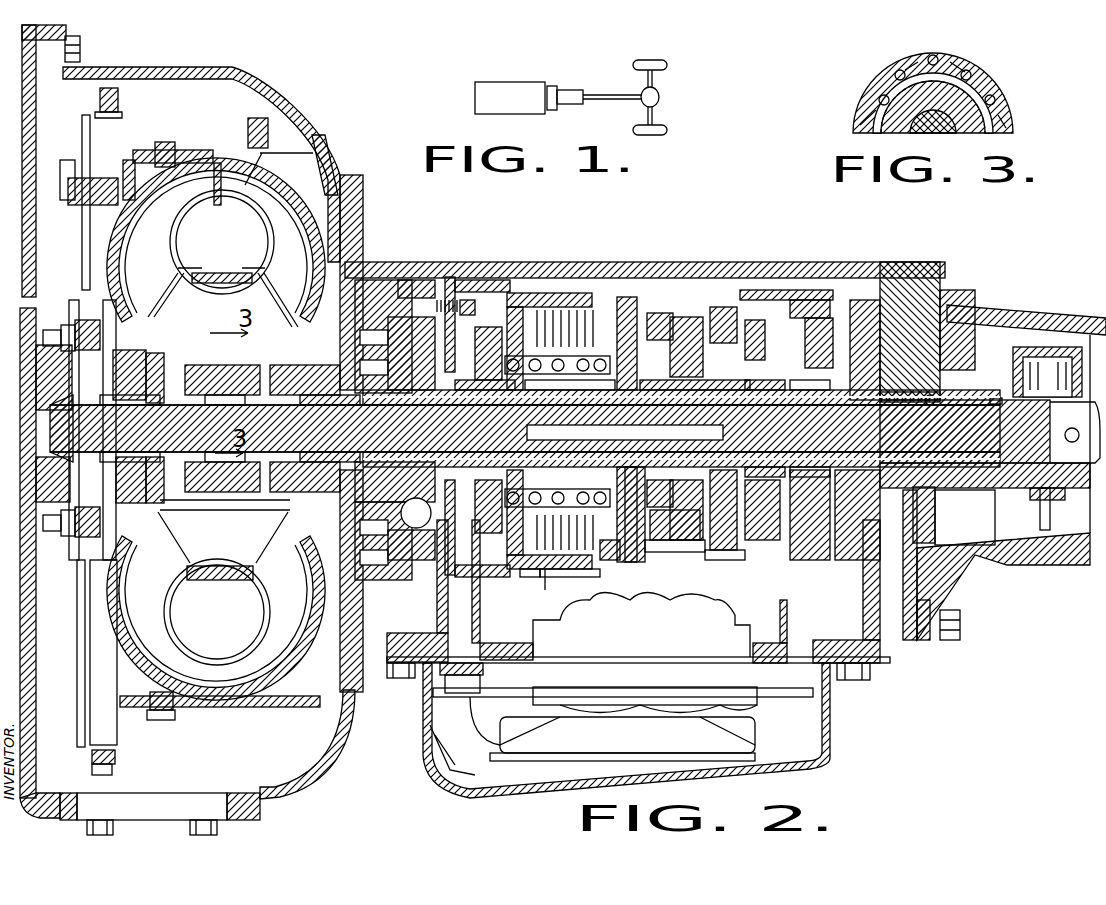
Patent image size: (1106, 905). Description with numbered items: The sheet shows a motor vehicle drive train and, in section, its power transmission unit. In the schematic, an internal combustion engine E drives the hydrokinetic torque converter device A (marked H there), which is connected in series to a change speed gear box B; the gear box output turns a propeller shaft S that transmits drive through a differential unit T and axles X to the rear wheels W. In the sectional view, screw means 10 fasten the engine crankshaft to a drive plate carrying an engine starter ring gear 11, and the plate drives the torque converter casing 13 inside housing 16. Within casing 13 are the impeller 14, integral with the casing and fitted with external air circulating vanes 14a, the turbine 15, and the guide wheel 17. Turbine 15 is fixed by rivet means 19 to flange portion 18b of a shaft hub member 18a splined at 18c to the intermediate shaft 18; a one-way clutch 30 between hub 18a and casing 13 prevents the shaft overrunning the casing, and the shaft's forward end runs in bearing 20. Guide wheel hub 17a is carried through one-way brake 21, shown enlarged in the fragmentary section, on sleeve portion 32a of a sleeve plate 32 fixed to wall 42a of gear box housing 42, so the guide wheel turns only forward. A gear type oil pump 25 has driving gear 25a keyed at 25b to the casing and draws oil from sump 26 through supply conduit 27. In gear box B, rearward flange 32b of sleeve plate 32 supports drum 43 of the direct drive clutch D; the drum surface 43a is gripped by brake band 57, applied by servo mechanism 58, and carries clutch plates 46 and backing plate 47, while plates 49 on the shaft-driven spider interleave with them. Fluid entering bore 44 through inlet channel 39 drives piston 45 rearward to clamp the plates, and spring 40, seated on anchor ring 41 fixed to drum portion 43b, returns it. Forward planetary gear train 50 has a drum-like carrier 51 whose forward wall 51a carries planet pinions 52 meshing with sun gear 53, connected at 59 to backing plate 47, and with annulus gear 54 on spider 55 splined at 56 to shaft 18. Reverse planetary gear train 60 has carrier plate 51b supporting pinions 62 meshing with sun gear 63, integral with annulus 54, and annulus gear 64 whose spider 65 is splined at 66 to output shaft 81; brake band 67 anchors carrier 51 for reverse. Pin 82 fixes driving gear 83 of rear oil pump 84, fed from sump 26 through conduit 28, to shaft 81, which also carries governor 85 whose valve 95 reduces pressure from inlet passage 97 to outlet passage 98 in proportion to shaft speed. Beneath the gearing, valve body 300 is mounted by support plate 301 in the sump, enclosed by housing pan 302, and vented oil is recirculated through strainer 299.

In FIG. 1, the internal combustion engine E is at (488, 88).
In FIG. 1, the hydraulic torque converter H is at (553, 85).
In FIG. 1, the change speed gear box B is at (576, 90).
In FIG. 2, the change speed gear box B is at (823, 273).
In FIG. 1, the propeller shaft S is at (626, 84).
In FIG. 1, the differential unit T is at (662, 97).
In FIG. 1, the axles X is at (658, 80).
In FIG. 1, the rear wheels W is at (660, 62).
In FIG. 2, the screw means 10 is at (80, 256).
In FIG. 2, the engine starter ring gear 11 is at (100, 98).
In FIG. 2, the torque converter casing 13 is at (162, 142).
In FIG. 2, the hydrokinetic torque converter device A is at (210, 133).
In FIG. 2, the impeller 14 is at (286, 239).
In FIG. 2, the air circulating vanes 14a is at (300, 158).
In FIG. 2, the turbine 15 is at (148, 237).
In FIG. 2, the housing 16 is at (288, 100).
In FIG. 2, the guide wheel 17 is at (62, 195).
In FIG. 3, the guide wheel hub portion 17a is at (856, 130).
In FIG. 2, the guide wheel hub portion 17a is at (225, 517).
In FIG. 3, the intermediate shaft 18 is at (946, 137).
In FIG. 2, the intermediate shaft 18 is at (525, 428).
In FIG. 2, the shaft hub member 18a is at (42, 470).
In FIG. 2, the flange portion 18b is at (278, 465).
In FIG. 2, the splines 18c is at (130, 428).
In FIG. 2, the rivet means 19 is at (80, 256).
In FIG. 2, the bearing 20 is at (78, 402).
In FIG. 3, the one-way brake device 21 is at (1021, 104).
In FIG. 2, the one-way brake device 21 is at (222, 480).
In FIG. 2, the gear type oil pump 25 is at (402, 324).
In FIG. 2, the driving gear 25a is at (422, 430).
In FIG. 2, the key means 25b is at (681, 410).
In FIG. 2, the oil sump 26 is at (510, 783).
In FIG. 2, the supply conduit 27 is at (470, 621).
In FIG. 2, the conduit 28 is at (917, 650).
In FIG. 2, the one-way clutch 30 is at (146, 372).
In FIG. 2, the sleeve plate 32 is at (505, 345).
In FIG. 3, the sleeve portion 32a is at (902, 140).
In FIG. 2, the sleeve portion 32a is at (320, 428).
In FIG. 2, the sleeve-like flange 32b is at (681, 444).
In FIG. 2, the inlet channel 39 is at (505, 395).
In FIG. 2, the spring 40 is at (525, 402).
In FIG. 2, the anchor ring 41 is at (570, 404).
In FIG. 2, the gear box housing 42 is at (486, 288).
In FIG. 2, the forward wall 42a is at (535, 426).
In FIG. 2, the drum element 43 is at (478, 498).
In FIG. 2, the outer peripheral surface 43a is at (525, 295).
In FIG. 2, the drum portion 43b is at (625, 435).
In FIG. 2, the piston receiving bore 44 is at (469, 426).
In FIG. 2, the piston 45 is at (446, 520).
In FIG. 2, the clutch plates 46 is at (570, 562).
In FIG. 2, the backing plate 47 is at (609, 550).
In FIG. 2, the clutch plates 49 is at (524, 564).
In FIG. 2, the direct drive clutch D is at (537, 574).
In FIG. 2, the forward planetary gear train 50 is at (705, 330).
In FIG. 2, the planet pinion carrier 51 is at (675, 330).
In FIG. 2, the forward wall portion 51a is at (620, 308).
In FIG. 2, the planet pinion carrier plate 51b is at (737, 330).
In FIG. 2, the planet pinion gears 52 is at (695, 404).
In FIG. 2, the sun gear element 53 is at (671, 513).
In FIG. 2, the annulus gear 54 is at (675, 552).
In FIG. 2, the spider element 55 is at (725, 554).
In FIG. 2, the splines 56 is at (810, 428).
In FIG. 2, the brake band 57 is at (562, 300).
In FIG. 2, the servo mechanism 58 is at (759, 454).
In FIG. 2, the driving connection 59 is at (645, 470).
In FIG. 2, the reverse drive planetary gear train 60 is at (745, 300).
In FIG. 2, the planet pinion gears 62 is at (759, 407).
In FIG. 2, the sun gear element 63 is at (759, 510).
In FIG. 2, the annulus gear 64 is at (789, 522).
In FIG. 2, the spider element 65 is at (810, 435).
In FIG. 2, the splines 66 is at (871, 430).
In FIG. 2, the brake band 67 is at (775, 292).
In FIG. 2, the output shaft 81 is at (990, 431).
In FIG. 2, the pin 82 is at (932, 412).
In FIG. 2, the driving gear 83 is at (928, 412).
In FIG. 2, the rear oil pump 84 is at (945, 345).
In FIG. 2, the governor mechanism 85 is at (1009, 355).
In FIG. 2, the governor control valve 95 is at (1042, 506).
In FIG. 2, the governor inlet passage 97 is at (994, 411).
In FIG. 2, the governor outlet passage 98 is at (985, 466).
In FIG. 2, the strainer 299 is at (708, 772).
In FIG. 2, the valve body 300 is at (782, 705).
In FIG. 2, the support plate 301 is at (530, 660).
In FIG. 2, the housing pan 302 is at (822, 752).